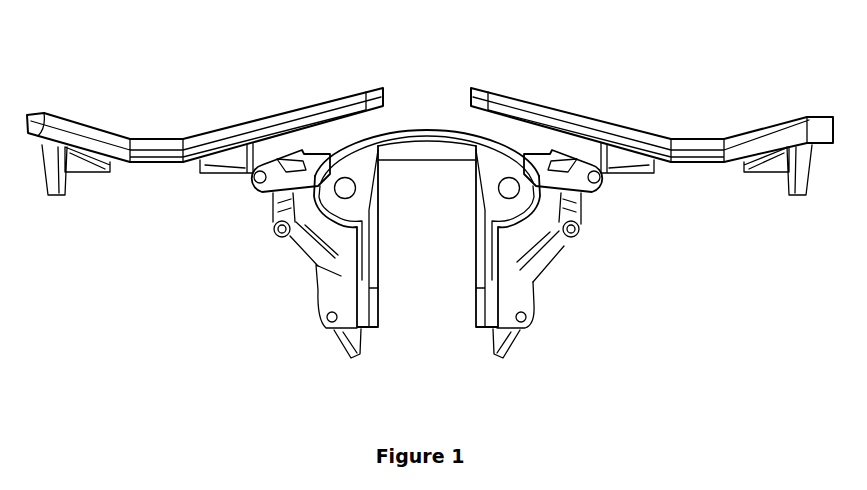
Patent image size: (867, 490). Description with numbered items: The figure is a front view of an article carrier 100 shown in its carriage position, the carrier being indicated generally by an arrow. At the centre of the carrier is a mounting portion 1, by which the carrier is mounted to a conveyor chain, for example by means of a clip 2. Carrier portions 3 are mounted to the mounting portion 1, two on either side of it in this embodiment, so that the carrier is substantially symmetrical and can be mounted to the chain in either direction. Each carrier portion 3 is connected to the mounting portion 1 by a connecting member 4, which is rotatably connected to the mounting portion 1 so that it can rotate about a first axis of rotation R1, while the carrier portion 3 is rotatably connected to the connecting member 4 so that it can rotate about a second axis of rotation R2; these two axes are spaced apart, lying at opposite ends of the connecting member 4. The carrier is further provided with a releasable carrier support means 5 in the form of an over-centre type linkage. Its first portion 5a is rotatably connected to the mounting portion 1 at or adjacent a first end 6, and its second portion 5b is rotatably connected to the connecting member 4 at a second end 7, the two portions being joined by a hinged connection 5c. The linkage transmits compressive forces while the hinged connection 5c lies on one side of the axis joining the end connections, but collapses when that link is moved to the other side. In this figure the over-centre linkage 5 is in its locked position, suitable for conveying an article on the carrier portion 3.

The article carrier 100 is at (174, 309).
The mounting portion 1 is at (413, 127).
The clip 2 is at (433, 163).
The carrier portion 3 is at (76, 121).
The connecting member 4 is at (577, 150).
The carrier support means 5 is at (557, 250).
The first portion 5a is at (522, 283).
The second portion 5b is at (582, 216).
The hinged connection 5c is at (580, 230).
The first end 6 is at (517, 337).
The second end 7 is at (620, 178).
The first axis of rotation R1 is at (509, 188).
The second axis of rotation R2 is at (597, 179).